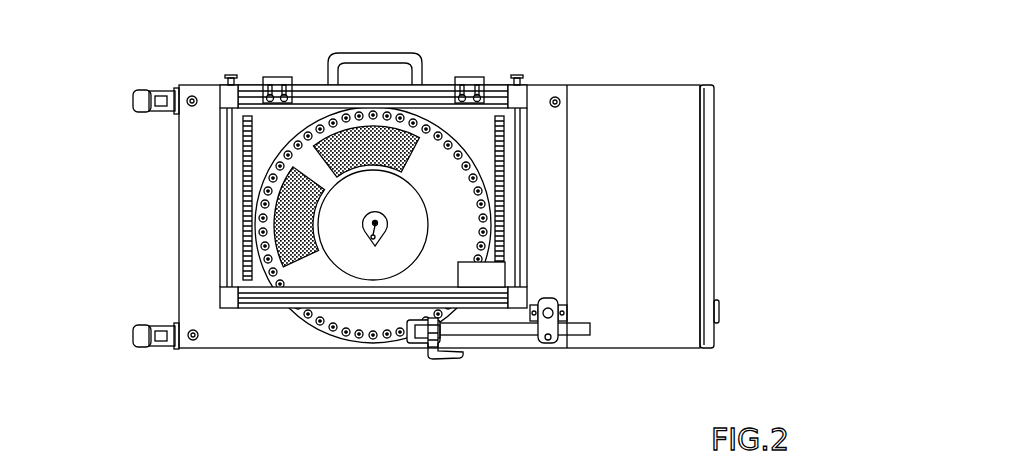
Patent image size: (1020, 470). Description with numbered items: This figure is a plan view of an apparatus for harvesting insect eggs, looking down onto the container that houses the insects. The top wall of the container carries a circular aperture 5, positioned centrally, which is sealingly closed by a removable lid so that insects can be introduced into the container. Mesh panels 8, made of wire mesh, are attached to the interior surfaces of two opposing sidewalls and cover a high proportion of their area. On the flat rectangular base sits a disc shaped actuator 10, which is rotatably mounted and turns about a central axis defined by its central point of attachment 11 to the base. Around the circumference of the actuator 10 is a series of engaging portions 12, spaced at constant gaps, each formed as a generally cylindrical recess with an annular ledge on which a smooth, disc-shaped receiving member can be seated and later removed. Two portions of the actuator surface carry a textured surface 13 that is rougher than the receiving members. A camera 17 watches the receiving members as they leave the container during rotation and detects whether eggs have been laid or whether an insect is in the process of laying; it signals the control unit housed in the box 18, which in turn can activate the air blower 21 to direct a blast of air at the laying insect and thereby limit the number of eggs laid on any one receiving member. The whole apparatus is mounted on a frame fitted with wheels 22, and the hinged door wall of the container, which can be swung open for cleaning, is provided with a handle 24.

The circular aperture 5 is at (421, 192).
The mesh panels 8 is at (245, 167).
The disc shaped actuator 10 is at (420, 150).
The central point of attachment 11 is at (375, 246).
The engaging portions 12 is at (258, 232).
The textured surface 13 is at (329, 137).
The camera 17 is at (412, 330).
The box 18 is at (668, 245).
The air blower 21 is at (488, 270).
The wheels 22 is at (160, 342).
The handle 24 is at (362, 56).